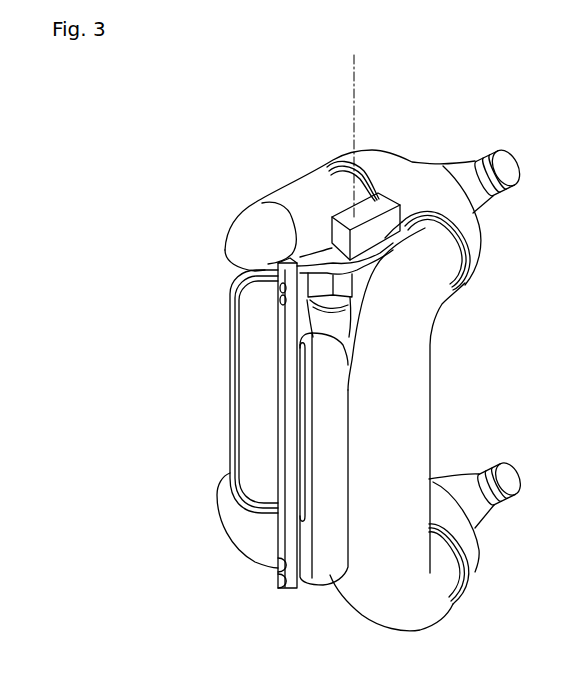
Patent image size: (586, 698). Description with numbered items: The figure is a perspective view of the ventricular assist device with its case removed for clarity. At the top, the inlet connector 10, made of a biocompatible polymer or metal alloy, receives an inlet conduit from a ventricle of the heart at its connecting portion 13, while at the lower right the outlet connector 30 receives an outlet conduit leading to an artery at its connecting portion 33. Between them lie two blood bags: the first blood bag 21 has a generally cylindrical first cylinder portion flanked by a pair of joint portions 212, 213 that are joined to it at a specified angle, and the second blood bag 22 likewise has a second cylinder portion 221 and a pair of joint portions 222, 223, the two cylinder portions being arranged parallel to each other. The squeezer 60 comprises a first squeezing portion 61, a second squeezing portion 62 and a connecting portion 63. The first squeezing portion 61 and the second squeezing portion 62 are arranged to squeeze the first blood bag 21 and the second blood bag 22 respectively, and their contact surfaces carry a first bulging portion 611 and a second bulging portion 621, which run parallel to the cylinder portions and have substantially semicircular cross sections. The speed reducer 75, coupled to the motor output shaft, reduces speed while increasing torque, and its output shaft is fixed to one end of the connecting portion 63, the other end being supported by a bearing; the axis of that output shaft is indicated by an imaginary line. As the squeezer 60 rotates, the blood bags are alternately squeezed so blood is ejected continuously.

The inlet connector 10 is at (433, 137).
The connecting portion 13 is at (496, 181).
The first blood bag 21 is at (214, 256).
The joint portion 212 is at (256, 232).
The joint portion 213 is at (240, 520).
The second blood bag 22 is at (442, 386).
The second cylinder portion 221 is at (410, 438).
The joint portion 222 is at (442, 268).
The joint portion 223 is at (423, 607).
The outlet connector 30 is at (494, 535).
The connecting portion 33 is at (500, 493).
The squeezer 60 is at (124, 446).
The first squeezing portion 61 is at (216, 403).
The first bulging portion 611 is at (230, 342).
The second squeezing portion 62 is at (321, 596).
The second bulging portion 621 is at (335, 523).
The connecting portion 63 is at (255, 232).
The speed reducer 75 is at (338, 339).